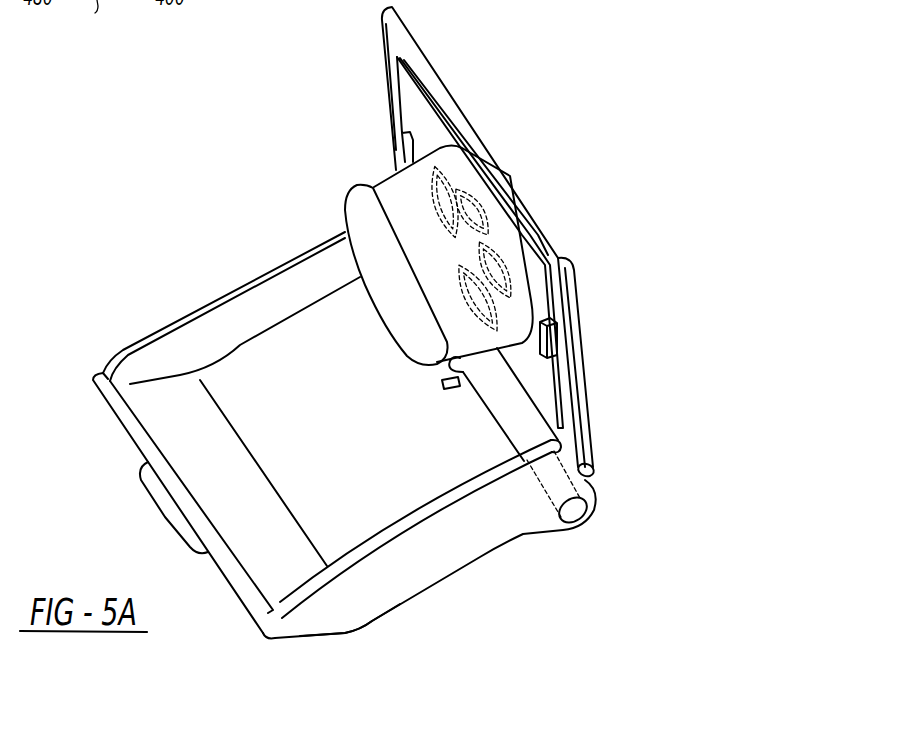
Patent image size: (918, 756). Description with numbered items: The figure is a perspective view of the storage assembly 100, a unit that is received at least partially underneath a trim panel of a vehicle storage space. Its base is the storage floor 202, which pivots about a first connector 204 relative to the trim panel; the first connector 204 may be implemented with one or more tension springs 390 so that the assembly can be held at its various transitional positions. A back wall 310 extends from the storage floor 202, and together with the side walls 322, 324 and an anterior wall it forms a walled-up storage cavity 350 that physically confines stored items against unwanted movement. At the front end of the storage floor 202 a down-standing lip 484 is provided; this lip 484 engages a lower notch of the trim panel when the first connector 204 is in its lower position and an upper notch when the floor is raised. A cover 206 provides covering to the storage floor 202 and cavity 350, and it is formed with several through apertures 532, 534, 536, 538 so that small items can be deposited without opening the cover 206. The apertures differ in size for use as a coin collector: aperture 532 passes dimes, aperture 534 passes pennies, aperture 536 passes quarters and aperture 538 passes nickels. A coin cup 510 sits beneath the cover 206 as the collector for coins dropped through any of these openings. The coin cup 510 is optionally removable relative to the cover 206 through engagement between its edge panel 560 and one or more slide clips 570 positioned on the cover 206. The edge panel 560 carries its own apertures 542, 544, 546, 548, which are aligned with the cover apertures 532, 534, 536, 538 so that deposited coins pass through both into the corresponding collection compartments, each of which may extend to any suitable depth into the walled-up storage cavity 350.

The storage assembly 100 is at (120, 479).
The storage floor 202 is at (433, 494).
The first connector 204 is at (577, 517).
The cover 206 is at (596, 345).
The back wall 310 is at (592, 482).
The side wall 322 is at (376, 600).
The side wall 324 is at (240, 307).
The walled-up storage cavity 350 is at (333, 485).
The tension spring 390 is at (440, 374).
The down-standing lip 484 is at (173, 511).
The coin cup 510 is at (346, 235).
The aperture 532 is at (476, 203).
The aperture 534 is at (442, 198).
The aperture 536 is at (474, 297).
The aperture 538 is at (500, 257).
The aperture 542 is at (459, 183).
The aperture 544 is at (436, 213).
The aperture 546 is at (458, 286).
The aperture 548 is at (511, 262).
The edge panel 560 is at (416, 100).
The slide clip 570 is at (561, 351).